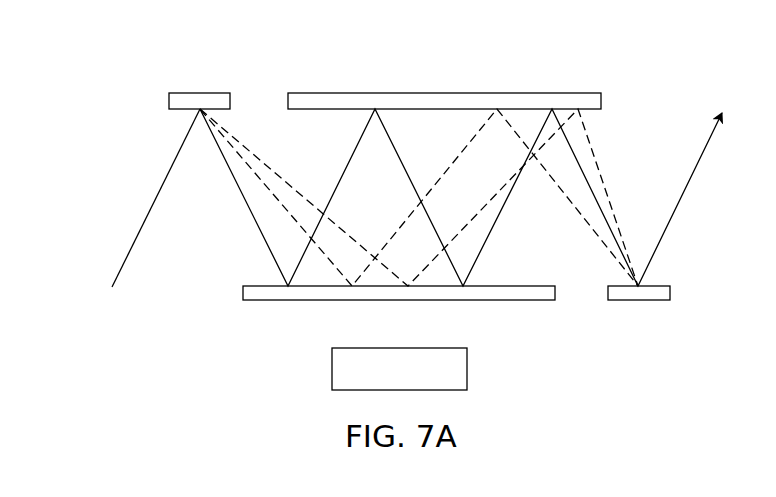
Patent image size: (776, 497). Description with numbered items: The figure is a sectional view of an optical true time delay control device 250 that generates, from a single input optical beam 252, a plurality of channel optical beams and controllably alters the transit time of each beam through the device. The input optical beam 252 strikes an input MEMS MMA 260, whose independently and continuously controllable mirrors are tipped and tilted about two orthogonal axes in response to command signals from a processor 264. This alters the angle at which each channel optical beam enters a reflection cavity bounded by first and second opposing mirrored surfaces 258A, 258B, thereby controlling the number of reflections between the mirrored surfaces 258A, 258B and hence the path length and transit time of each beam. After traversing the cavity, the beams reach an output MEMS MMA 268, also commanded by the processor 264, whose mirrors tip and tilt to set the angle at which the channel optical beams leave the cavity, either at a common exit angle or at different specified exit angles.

The optical true time delay (TTD) control device 250 is at (636, 50).
The single input optical beam 252 is at (137, 238).
The input MEMS MMA 260 is at (200, 93).
The first mirrored surface 258A is at (445, 93).
The second mirrored surface 258B is at (400, 300).
The output MEMS MMA 268 is at (640, 300).
The processor 264 is at (467, 370).